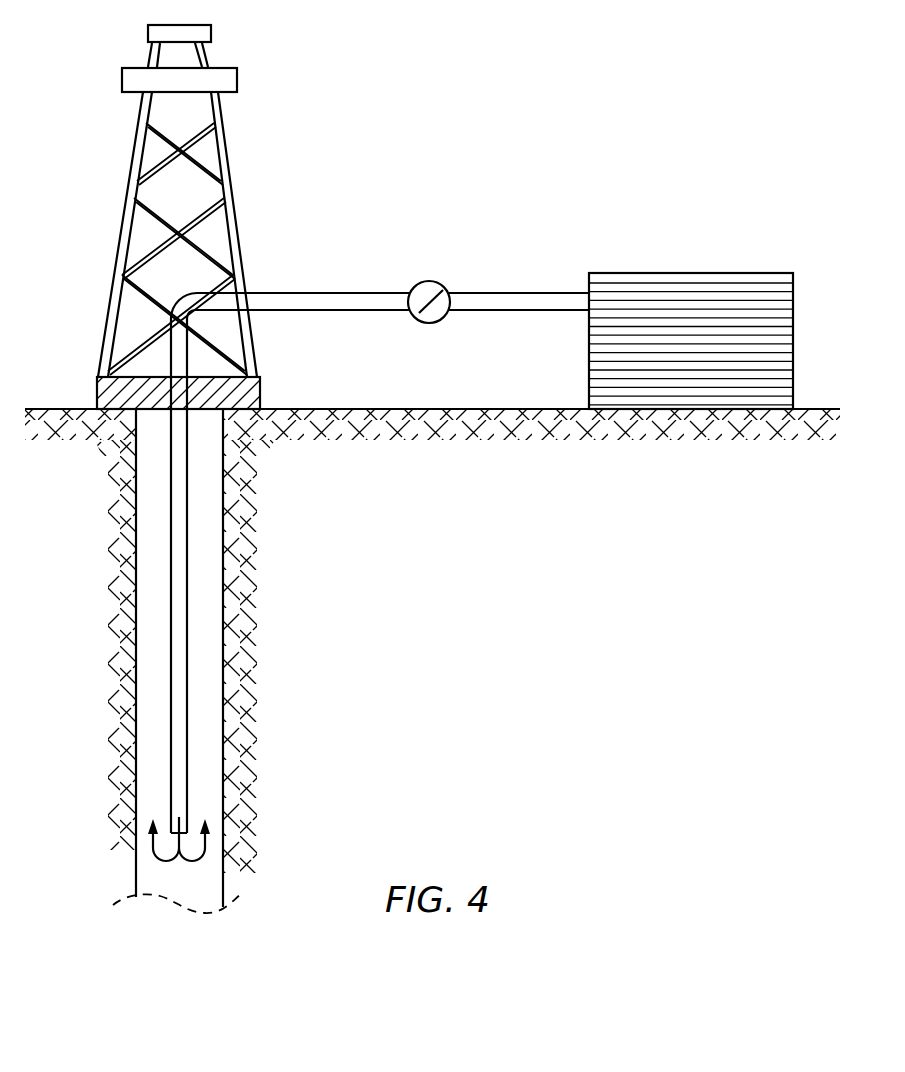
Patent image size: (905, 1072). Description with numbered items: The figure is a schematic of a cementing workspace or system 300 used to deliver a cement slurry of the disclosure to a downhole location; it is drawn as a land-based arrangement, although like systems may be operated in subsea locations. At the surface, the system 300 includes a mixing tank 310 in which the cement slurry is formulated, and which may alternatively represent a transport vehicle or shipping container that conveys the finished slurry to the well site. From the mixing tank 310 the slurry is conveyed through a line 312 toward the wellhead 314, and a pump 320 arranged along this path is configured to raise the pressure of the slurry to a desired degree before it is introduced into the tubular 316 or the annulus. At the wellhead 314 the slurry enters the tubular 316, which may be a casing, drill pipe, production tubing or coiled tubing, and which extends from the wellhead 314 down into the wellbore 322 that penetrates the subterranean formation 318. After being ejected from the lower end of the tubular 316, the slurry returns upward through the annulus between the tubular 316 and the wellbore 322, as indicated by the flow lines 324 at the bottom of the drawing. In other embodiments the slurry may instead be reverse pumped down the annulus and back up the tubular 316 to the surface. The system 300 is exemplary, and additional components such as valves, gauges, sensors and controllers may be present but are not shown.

The cementing workspace or system 300 is at (536, 99).
The mixing tank 310 is at (697, 273).
The line 312 is at (365, 293).
The wellhead 314 is at (98, 395).
The tubular 316 is at (187, 490).
The subterranean formation 318 is at (90, 501).
The pump 320 is at (440, 320).
The wellbore 322 is at (227, 690).
The flow lines 324 is at (155, 860).